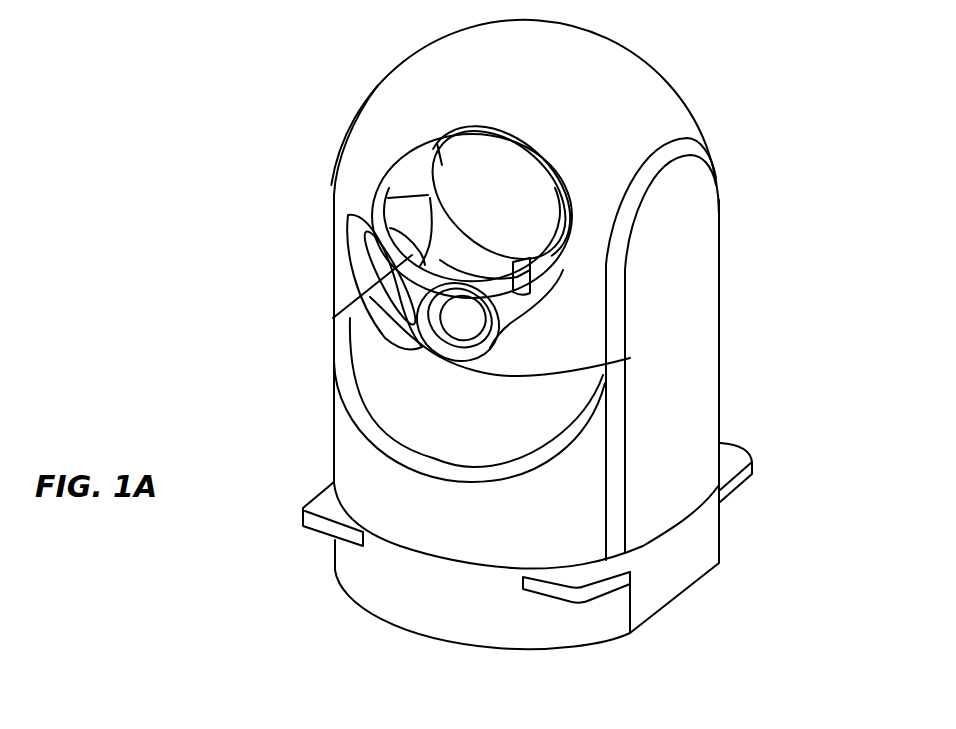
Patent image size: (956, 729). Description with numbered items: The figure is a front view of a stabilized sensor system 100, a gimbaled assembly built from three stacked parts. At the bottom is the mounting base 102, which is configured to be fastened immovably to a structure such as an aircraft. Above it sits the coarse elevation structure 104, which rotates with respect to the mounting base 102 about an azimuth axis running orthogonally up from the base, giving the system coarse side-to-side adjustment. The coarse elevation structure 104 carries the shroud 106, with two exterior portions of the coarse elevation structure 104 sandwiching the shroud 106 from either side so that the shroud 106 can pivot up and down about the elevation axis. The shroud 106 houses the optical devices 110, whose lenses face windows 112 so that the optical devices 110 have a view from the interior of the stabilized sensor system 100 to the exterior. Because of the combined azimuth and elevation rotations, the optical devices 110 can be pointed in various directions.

The stabilized sensor system 100 is at (739, 34).
The mounting base 102 is at (695, 555).
The coarse elevation structure 104 is at (690, 297).
The shroud 106 is at (670, 118).
The optical devices 110 is at (477, 192).
The windows 112 is at (548, 280).